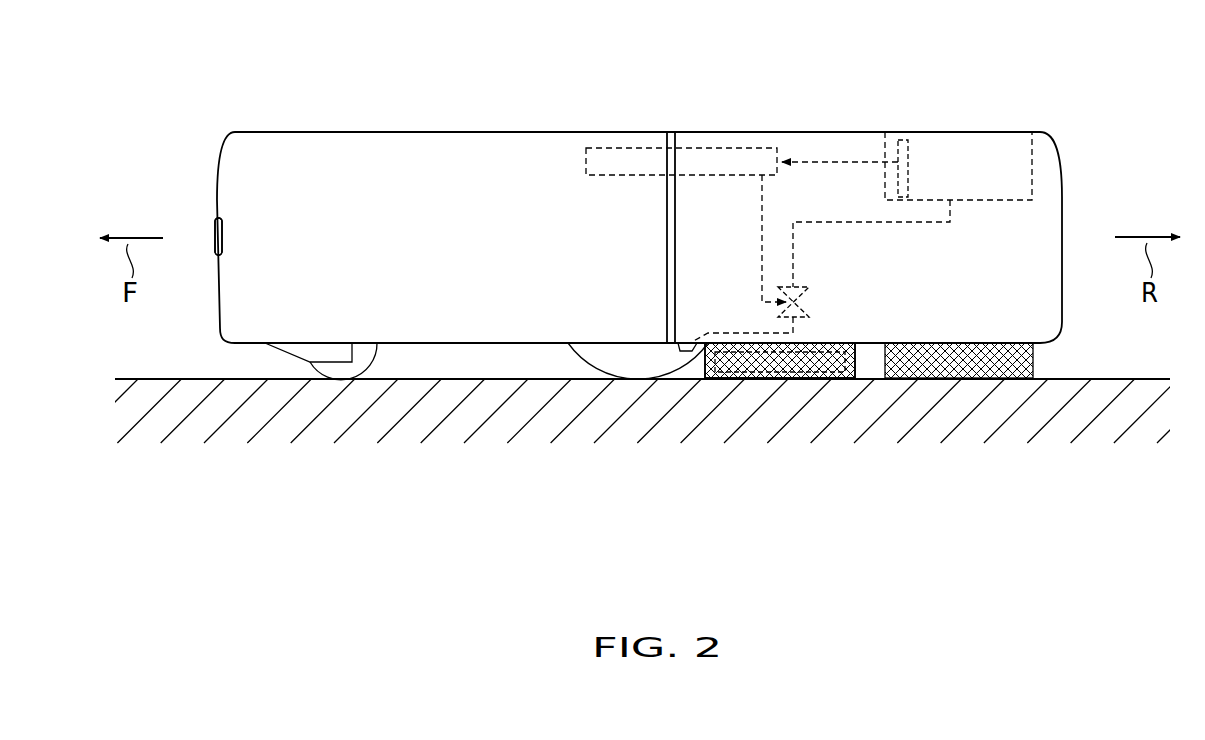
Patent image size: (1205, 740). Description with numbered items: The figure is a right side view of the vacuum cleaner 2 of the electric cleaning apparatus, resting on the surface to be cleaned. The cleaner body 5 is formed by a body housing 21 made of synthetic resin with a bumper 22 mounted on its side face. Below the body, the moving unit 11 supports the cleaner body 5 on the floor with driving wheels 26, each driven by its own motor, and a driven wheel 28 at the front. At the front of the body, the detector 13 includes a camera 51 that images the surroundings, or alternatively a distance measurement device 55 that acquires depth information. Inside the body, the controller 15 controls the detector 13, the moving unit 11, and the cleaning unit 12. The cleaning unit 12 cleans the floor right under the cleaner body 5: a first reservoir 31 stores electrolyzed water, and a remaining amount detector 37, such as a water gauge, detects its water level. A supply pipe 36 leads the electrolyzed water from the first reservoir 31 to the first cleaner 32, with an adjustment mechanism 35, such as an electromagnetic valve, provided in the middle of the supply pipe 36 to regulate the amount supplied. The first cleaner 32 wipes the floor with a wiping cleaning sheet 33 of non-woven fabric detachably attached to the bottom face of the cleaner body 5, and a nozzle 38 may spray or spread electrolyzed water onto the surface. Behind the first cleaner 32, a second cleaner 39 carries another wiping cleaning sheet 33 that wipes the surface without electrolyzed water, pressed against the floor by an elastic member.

The vacuum cleaner 2 is at (641, 100).
The cleaner body 5 is at (875, 128).
The moving unit 11 is at (586, 368).
The cleaning unit 12 is at (838, 384).
The detector 13 is at (215, 233).
The controller 15 is at (738, 148).
The body housing 21 is at (835, 148).
The bumper 22 is at (488, 168).
The driving wheels 26 is at (650, 372).
The driven wheel 28 is at (340, 380).
The first reservoir 31 is at (1032, 172).
The first cleaner 32 is at (805, 378).
The wiping cleaning sheet 33 is at (780, 360).
The adjustment mechanism 35 is at (810, 316).
The supply pipe 36 is at (903, 224).
The remaining amount detector 37 is at (907, 150).
The nozzle 38 is at (686, 340).
The second cleaner 39 is at (975, 378).
The camera 51 is at (218, 236).
The distance measurement device 55 is at (218, 236).